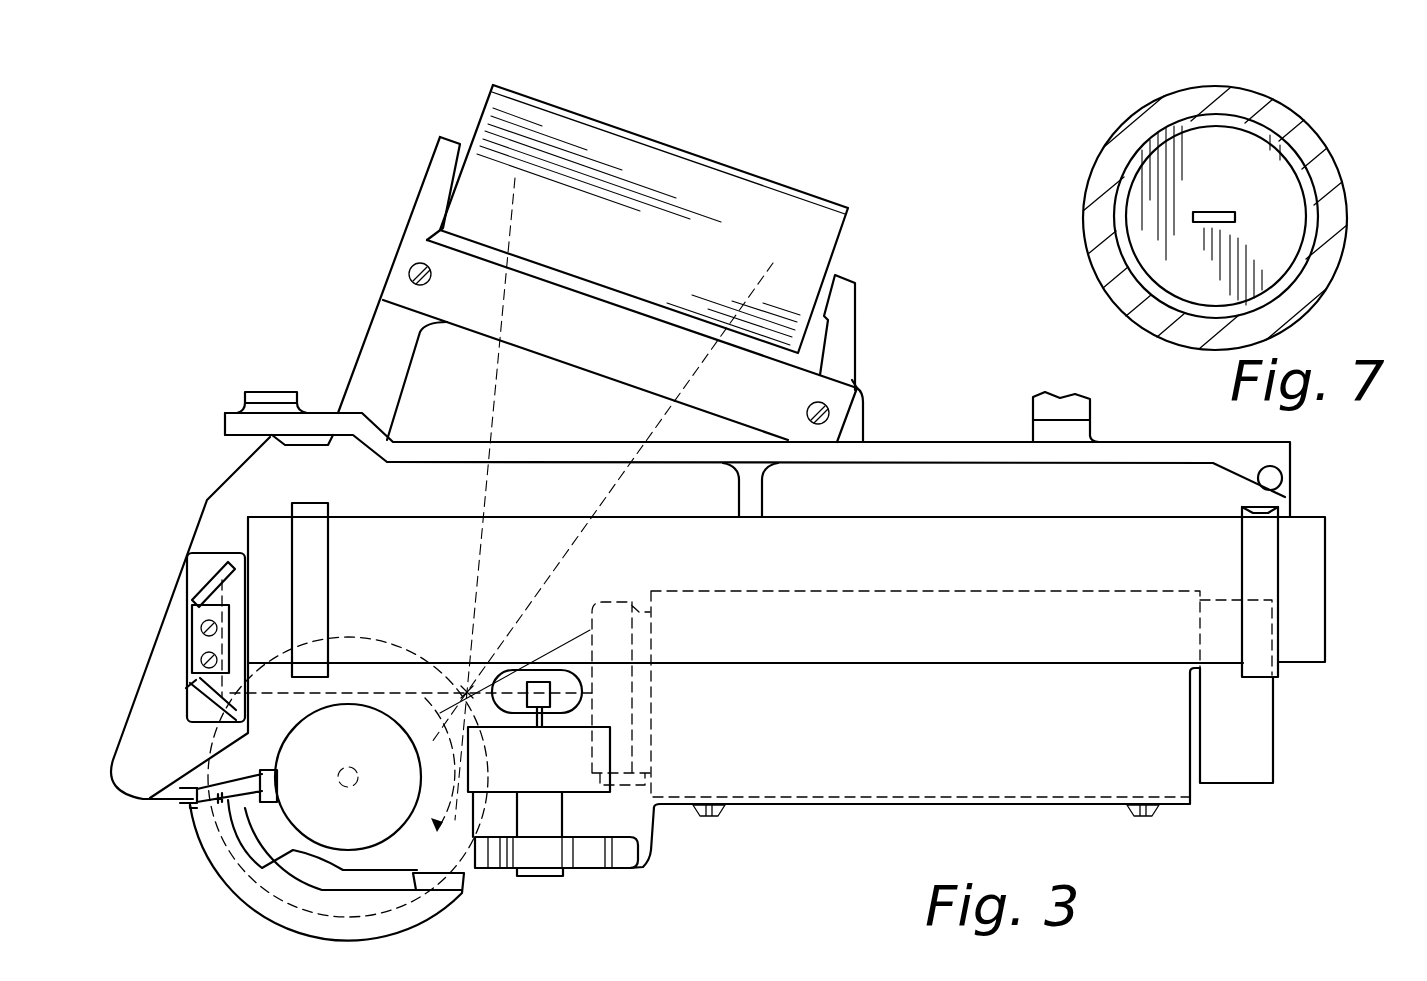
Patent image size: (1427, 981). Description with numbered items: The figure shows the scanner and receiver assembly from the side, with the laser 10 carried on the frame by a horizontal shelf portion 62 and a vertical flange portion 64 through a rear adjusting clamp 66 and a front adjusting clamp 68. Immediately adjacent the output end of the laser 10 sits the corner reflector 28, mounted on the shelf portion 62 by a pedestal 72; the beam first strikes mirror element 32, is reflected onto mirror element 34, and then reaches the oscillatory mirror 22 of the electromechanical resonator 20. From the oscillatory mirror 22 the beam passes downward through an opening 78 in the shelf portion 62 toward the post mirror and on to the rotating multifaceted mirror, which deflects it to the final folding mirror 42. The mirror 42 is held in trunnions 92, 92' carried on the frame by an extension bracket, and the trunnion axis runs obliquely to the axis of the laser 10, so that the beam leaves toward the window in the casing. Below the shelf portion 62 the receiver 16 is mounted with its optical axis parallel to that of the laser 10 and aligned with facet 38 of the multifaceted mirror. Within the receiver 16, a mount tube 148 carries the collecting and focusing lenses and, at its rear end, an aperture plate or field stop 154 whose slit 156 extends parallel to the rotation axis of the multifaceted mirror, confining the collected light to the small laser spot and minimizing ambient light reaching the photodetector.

In FIG. 3, the laser 10 is at (1058, 520).
In FIG. 3, the receiver 16 is at (950, 808).
In FIG. 3, the electromechanical resonator 20 is at (578, 790).
In FIG. 3, the oscillatory mirror 22 is at (545, 700).
In FIG. 3, the corner reflector 28 is at (192, 640).
In FIG. 3, the mirror element 32 is at (210, 602).
In FIG. 3, the mirror element 34 is at (205, 718).
In FIG. 3, the facet 38 is at (400, 777).
In FIG. 3, the final folding mirror 42 is at (847, 240).
In FIG. 3, the horizontal shelf portion 62 is at (200, 512).
In FIG. 3, the vertical flange portion 64 is at (958, 448).
In FIG. 3, the rear adjusting clamp 66 is at (1265, 535).
In FIG. 3, the front adjusting clamp 68 is at (312, 515).
In FIG. 3, the pedestal 72 is at (198, 568).
In FIG. 3, the opening 78 is at (517, 680).
In FIG. 3, the trunnion 92 is at (870, 332).
In FIG. 3, the trunnion 92' is at (397, 188).
In FIG. 7, the mount tube 148 is at (1142, 150).
In FIG. 7, the field stop 154 is at (1248, 148).
In FIG. 7, the slit 156 is at (1212, 215).